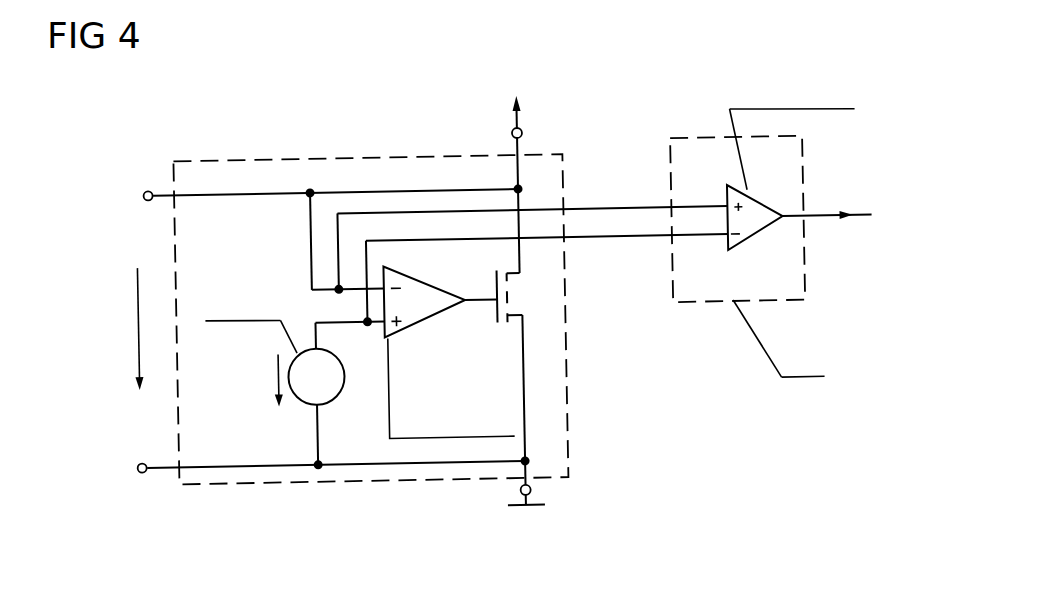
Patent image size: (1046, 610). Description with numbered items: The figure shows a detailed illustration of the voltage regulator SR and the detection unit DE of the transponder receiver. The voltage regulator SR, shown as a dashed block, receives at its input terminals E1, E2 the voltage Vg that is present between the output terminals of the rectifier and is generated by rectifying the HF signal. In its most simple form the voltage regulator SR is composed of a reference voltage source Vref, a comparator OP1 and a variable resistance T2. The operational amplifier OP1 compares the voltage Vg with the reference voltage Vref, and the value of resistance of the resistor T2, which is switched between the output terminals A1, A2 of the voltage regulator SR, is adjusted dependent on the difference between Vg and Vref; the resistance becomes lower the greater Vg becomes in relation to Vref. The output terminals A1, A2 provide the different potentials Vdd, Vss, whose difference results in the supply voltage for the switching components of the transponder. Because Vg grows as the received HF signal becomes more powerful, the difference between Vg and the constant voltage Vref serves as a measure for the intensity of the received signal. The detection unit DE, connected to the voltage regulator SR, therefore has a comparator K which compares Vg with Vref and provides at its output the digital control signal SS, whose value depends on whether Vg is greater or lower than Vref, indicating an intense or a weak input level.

The voltage regulator SR is at (182, 486).
The input terminal E1 is at (307, 195).
The input terminal E2 is at (309, 467).
The rectified voltage Vg is at (118, 329).
The reference voltage source Vref is at (269, 367).
The comparator OP1 is at (418, 308).
The variable resistance T2 is at (525, 324).
The output terminal A1 is at (537, 152).
The supply potential Vdd is at (543, 106).
The output terminal A2 is at (562, 484).
The supply potential Vss is at (504, 511).
The detection unit DE is at (688, 316).
The comparator K is at (791, 167).
The control signal SS is at (827, 191).